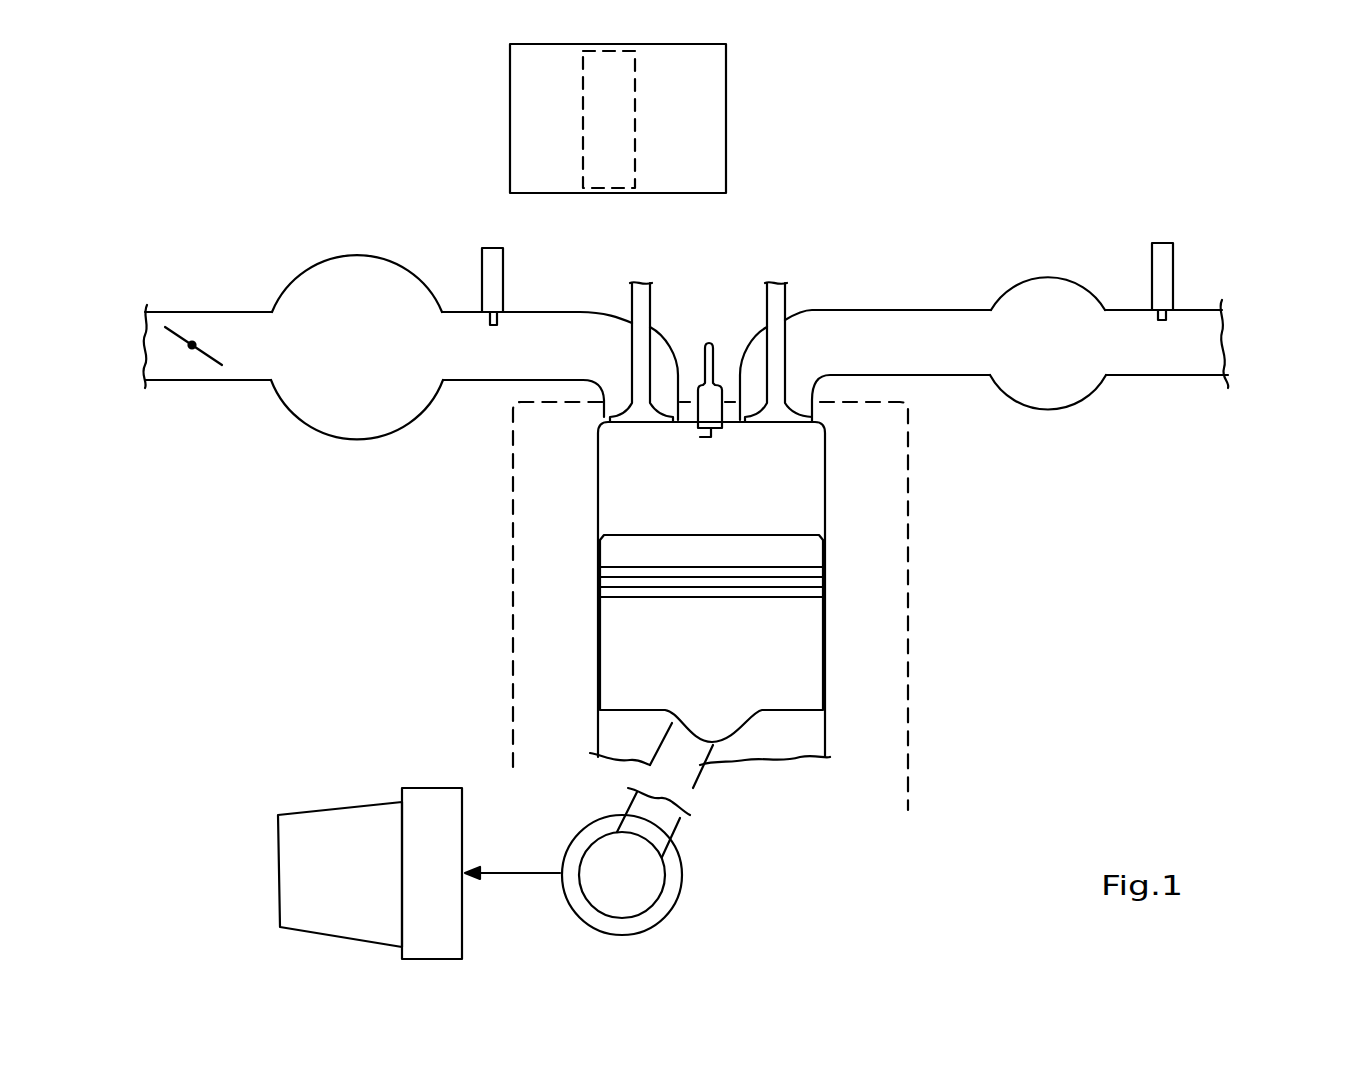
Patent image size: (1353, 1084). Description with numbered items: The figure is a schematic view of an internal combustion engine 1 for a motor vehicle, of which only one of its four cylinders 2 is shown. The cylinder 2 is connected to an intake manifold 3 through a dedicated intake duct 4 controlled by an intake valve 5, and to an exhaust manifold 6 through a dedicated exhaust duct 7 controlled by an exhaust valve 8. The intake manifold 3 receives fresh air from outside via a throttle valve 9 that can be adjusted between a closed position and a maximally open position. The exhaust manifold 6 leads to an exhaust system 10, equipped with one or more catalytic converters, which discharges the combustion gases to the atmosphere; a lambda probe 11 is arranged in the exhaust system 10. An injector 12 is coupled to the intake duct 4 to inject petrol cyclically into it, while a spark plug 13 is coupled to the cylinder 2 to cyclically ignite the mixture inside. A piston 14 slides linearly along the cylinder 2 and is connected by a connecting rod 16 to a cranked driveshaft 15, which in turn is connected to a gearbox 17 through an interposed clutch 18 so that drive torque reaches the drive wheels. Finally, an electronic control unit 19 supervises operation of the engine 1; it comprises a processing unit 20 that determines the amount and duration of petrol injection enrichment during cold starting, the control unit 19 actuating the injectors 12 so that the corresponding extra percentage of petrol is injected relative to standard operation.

The internal combustion engine 1 is at (989, 656).
The cylinder 2 is at (822, 484).
The intake manifold 3 is at (358, 442).
The intake duct 4 is at (467, 375).
The intake valve 5 is at (637, 302).
The exhaust manifold 6 is at (1042, 412).
The exhaust duct 7 is at (892, 322).
The exhaust valve 8 is at (780, 306).
The throttle valve 9 is at (178, 335).
The exhaust system 10 is at (1203, 373).
The lambda probe 11 is at (1165, 254).
The injector 12 is at (497, 274).
The spark plug 13 is at (712, 352).
The piston 14 is at (825, 698).
The cranked driveshaft 15 is at (651, 880).
The connecting rod 16 is at (698, 765).
The gearbox 17 is at (306, 820).
The clutch 18 is at (416, 798).
The electronic control unit 19 is at (740, 130).
The processing unit 20 is at (622, 124).